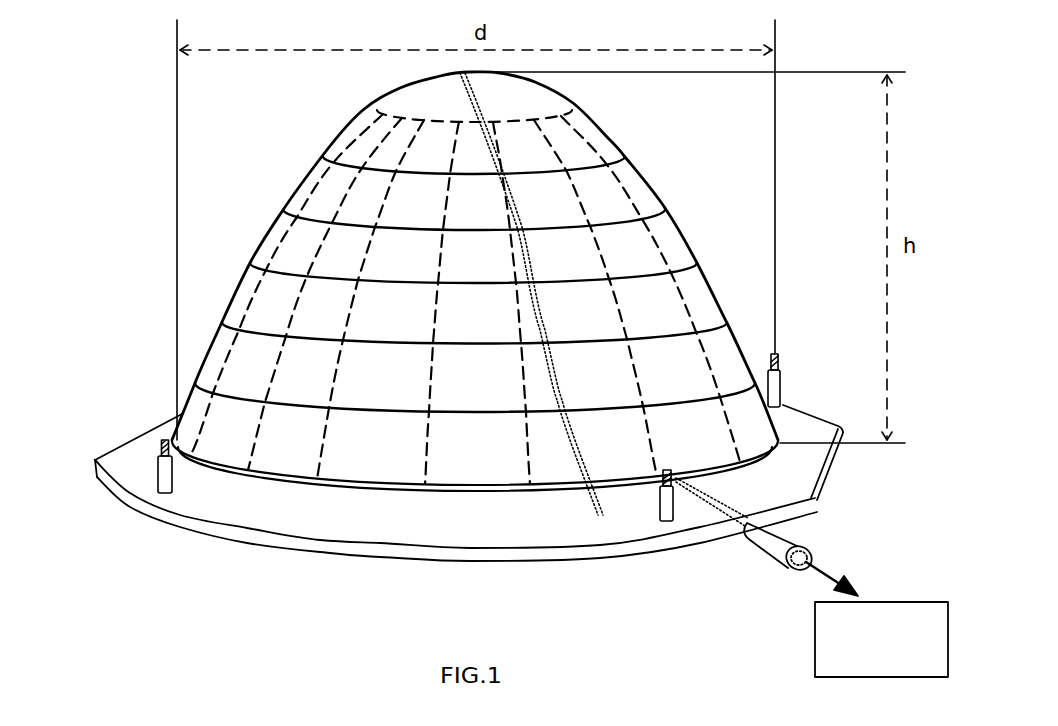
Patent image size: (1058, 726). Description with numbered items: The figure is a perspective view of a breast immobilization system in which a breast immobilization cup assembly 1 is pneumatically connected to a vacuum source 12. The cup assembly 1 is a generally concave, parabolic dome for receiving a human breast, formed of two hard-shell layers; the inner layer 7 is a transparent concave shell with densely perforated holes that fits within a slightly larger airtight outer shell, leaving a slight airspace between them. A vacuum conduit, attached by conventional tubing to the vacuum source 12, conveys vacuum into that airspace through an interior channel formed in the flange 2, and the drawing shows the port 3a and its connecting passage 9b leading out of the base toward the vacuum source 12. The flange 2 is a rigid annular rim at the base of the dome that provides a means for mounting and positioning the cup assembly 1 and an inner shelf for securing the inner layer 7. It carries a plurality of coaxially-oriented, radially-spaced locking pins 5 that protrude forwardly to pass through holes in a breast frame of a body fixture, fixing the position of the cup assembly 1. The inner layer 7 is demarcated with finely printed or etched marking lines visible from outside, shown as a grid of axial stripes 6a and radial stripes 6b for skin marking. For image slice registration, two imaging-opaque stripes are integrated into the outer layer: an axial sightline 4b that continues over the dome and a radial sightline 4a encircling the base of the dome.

The breast immobilization cup assembly 1 is at (348, 220).
The flange 2 is at (130, 461).
The vacuum port tube 3a is at (777, 538).
The radial sightline 4a is at (278, 483).
The axial sightline 4b is at (560, 427).
The locking pins 5 is at (660, 508).
The axial stripes 6a is at (612, 183).
The radial stripes 6b is at (645, 212).
The inner layer 7 is at (633, 258).
The vacuum passage 9b is at (705, 495).
The vacuum source 12 is at (882, 600).